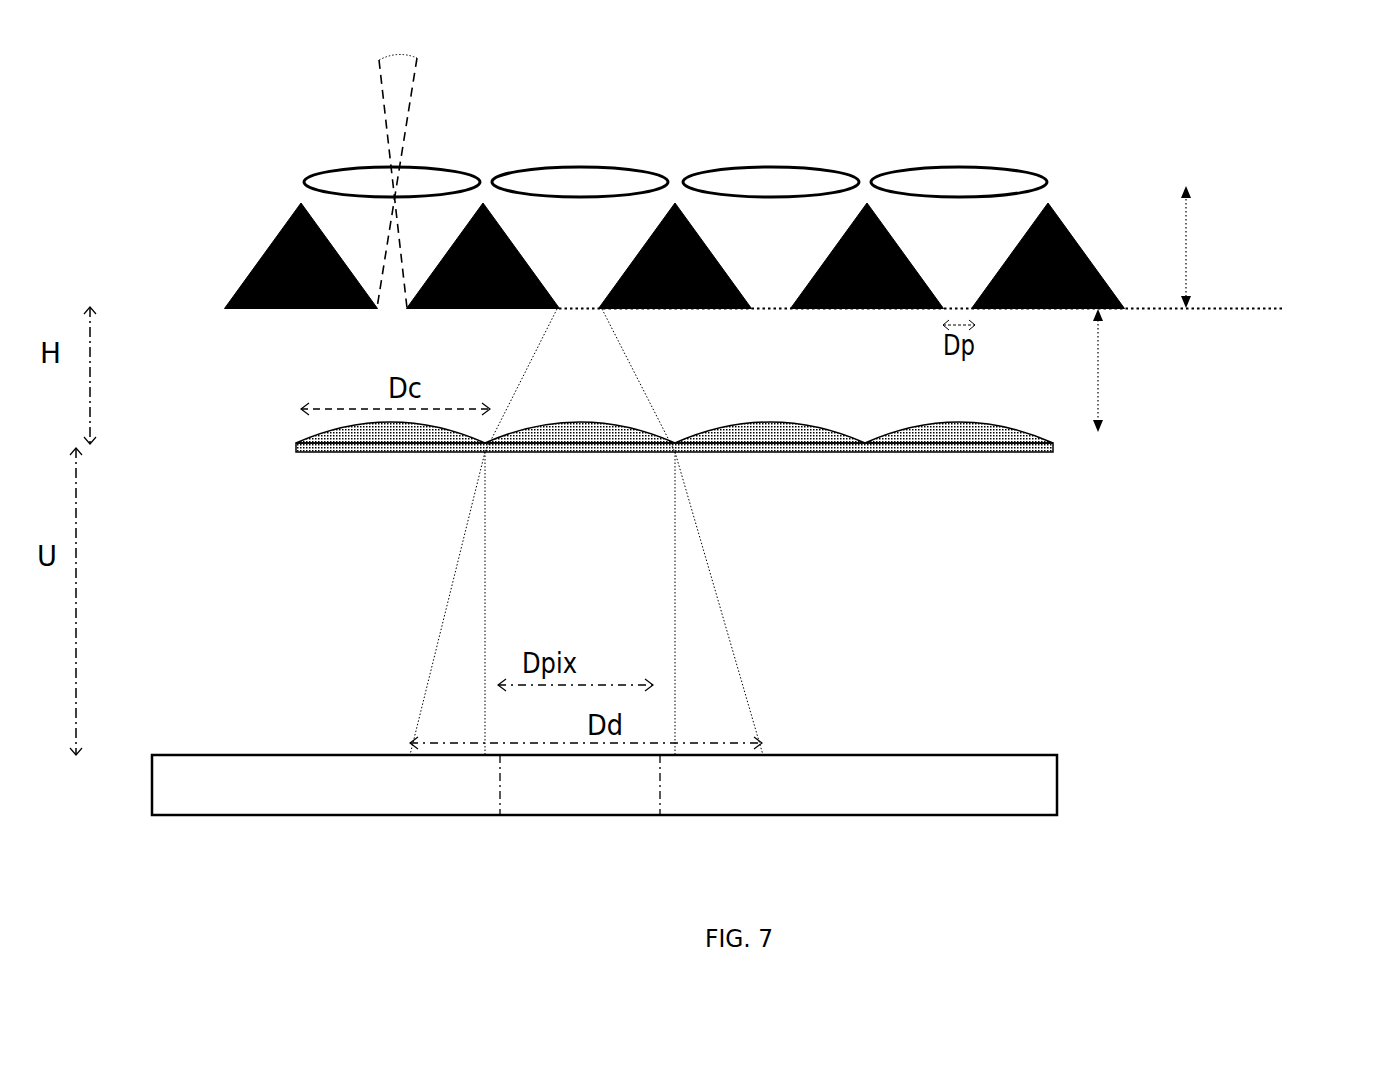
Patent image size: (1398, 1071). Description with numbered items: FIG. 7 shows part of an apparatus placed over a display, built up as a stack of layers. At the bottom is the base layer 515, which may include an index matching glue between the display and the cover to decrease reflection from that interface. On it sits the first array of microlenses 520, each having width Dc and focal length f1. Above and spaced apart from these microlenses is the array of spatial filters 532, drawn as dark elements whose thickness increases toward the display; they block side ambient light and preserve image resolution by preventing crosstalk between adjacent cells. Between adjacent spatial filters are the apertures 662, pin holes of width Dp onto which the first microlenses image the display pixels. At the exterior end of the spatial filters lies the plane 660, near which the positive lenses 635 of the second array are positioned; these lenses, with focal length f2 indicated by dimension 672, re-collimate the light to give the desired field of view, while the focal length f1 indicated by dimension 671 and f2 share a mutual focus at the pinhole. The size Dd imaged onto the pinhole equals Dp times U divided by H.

The array of spatial filters 532 is at (225, 233).
The positive lenses 635 is at (742, 165).
The apertures 662 is at (383, 309).
The aperture plane 660 is at (957, 310).
The focal length f2 672 is at (1288, 247).
The focal length f1 671 is at (1202, 370).
The base layer 515 is at (650, 435).
The first array of microlenses 520 is at (282, 435).